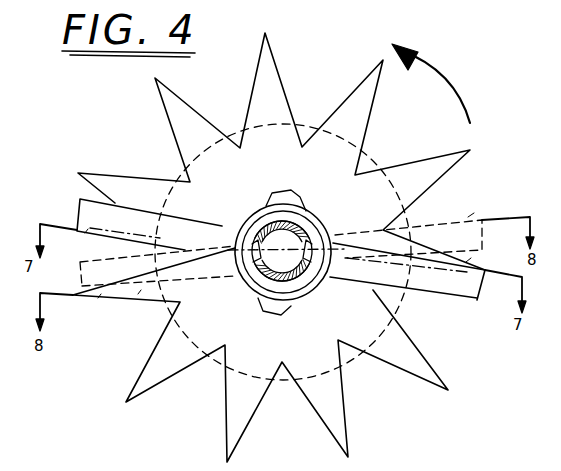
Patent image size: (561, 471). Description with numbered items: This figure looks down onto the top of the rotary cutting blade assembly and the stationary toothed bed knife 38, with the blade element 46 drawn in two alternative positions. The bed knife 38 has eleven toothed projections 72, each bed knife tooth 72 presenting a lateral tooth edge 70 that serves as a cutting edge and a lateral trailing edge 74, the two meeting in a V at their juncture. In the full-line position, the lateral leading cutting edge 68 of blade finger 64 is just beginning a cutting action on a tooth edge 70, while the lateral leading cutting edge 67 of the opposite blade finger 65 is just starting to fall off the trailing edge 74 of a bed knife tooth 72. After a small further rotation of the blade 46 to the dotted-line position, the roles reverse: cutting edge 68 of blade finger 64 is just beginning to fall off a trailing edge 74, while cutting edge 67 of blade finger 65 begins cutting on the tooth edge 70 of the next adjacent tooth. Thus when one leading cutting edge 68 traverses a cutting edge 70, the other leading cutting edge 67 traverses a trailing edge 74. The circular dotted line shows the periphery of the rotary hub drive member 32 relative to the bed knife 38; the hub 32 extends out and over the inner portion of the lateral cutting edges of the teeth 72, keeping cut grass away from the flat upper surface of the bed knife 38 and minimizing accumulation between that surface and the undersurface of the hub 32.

The rotary hub drive member 32 is at (279, 247).
The bed knife 38 is at (288, 123).
The blade element 46 is at (223, 232).
The blade finger 64 is at (87, 210).
The opposite blade finger 65 is at (483, 239).
The lateral leading cutting edge 67 is at (470, 214).
The lateral leading cutting edge 68 is at (85, 233).
The tooth edge 70 is at (433, 187).
The bed knife tooth 72 is at (263, 98).
The trailing edge 74 is at (440, 227).